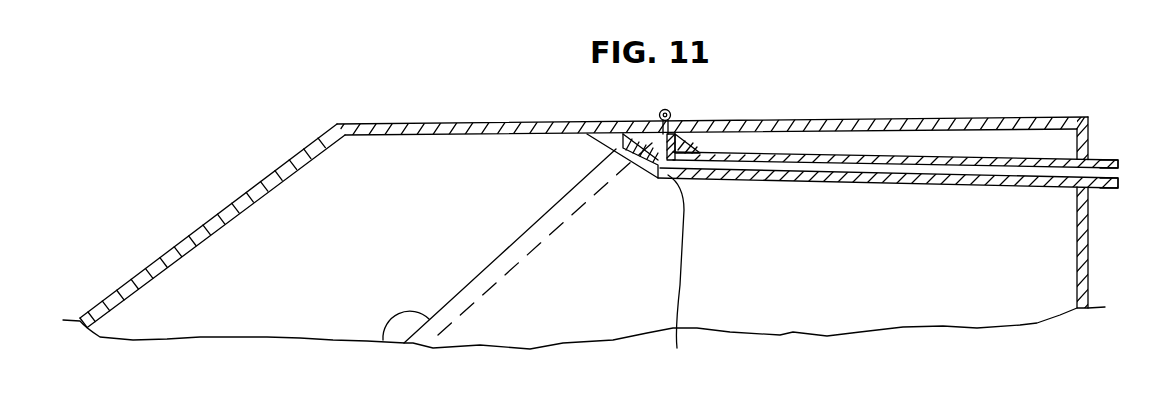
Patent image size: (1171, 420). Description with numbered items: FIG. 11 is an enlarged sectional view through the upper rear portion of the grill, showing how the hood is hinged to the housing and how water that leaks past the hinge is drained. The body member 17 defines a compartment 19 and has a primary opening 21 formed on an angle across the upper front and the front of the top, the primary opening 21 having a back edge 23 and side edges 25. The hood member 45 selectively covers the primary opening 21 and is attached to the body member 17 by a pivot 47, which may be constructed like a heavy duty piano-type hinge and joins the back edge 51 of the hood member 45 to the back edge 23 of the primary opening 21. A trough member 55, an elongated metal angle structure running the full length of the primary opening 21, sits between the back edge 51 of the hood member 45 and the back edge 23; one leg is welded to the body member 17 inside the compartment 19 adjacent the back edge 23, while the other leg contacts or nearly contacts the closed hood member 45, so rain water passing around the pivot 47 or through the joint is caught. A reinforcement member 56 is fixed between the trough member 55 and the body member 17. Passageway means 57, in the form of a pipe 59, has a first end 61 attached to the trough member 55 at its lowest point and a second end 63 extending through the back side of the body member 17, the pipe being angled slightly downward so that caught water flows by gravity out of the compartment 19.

The body member 17 is at (1094, 257).
The compartment 19 is at (886, 278).
The primary opening 21 is at (298, 304).
The back edge 23 is at (682, 126).
The side edges 25 is at (384, 340).
The hood member 45 is at (226, 203).
The pivot 47 is at (665, 109).
The back edge 51 is at (633, 128).
The trough member 55 is at (592, 130).
The reinforcement member 56 is at (694, 142).
The passageway means 57 is at (888, 148).
The pipe 59 is at (948, 157).
The first end 61 is at (687, 269).
The second end 63 is at (1101, 163).